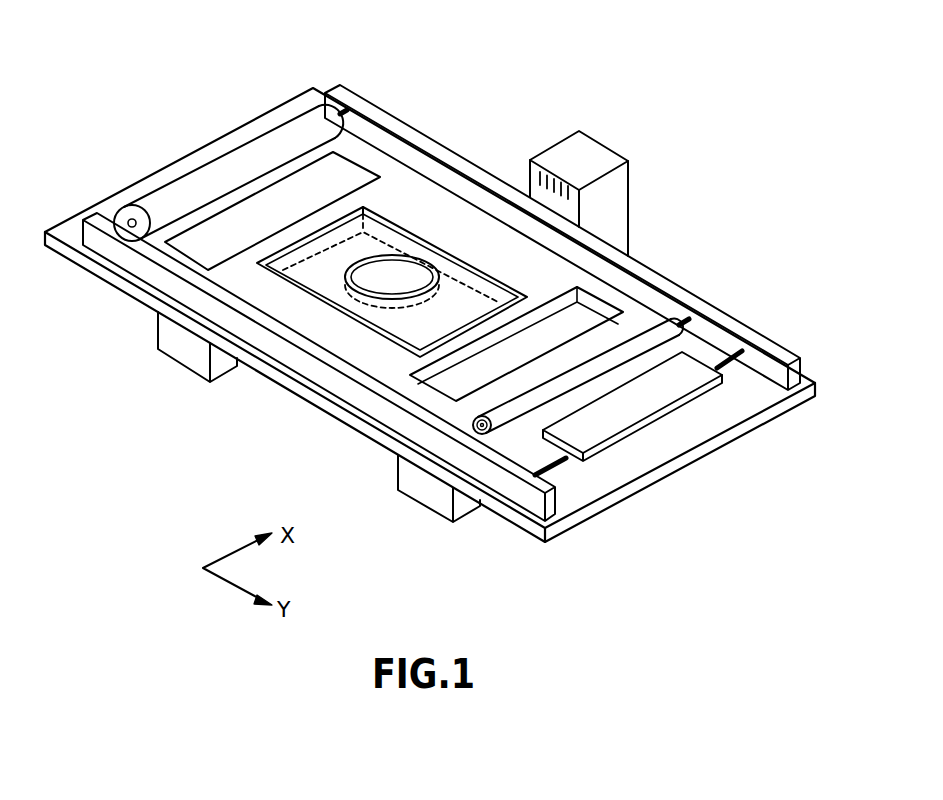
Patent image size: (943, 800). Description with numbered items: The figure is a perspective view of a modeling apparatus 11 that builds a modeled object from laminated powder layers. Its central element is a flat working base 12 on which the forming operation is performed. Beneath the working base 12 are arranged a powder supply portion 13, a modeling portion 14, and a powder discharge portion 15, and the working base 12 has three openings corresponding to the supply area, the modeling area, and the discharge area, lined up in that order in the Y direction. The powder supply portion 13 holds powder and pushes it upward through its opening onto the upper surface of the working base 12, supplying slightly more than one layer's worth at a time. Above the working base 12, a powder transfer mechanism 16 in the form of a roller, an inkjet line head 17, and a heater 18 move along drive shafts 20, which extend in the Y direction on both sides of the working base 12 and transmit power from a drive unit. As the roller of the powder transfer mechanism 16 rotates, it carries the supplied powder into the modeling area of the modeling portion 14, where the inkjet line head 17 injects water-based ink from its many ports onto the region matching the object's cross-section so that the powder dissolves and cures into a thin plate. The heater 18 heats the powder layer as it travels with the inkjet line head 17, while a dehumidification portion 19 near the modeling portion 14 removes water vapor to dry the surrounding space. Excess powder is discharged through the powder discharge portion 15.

The modeling apparatus 11 is at (540, 56).
The working base 12 is at (710, 427).
The powder supply portion 13 is at (182, 352).
The modeling portion 14 is at (415, 332).
The powder discharge portion 15 is at (425, 490).
The powder transfer mechanism 16 is at (248, 160).
The inkjet line head 17 is at (685, 375).
The heater 18 is at (647, 338).
The dehumidification portion 19 is at (610, 192).
The drive shafts 20 is at (773, 350).